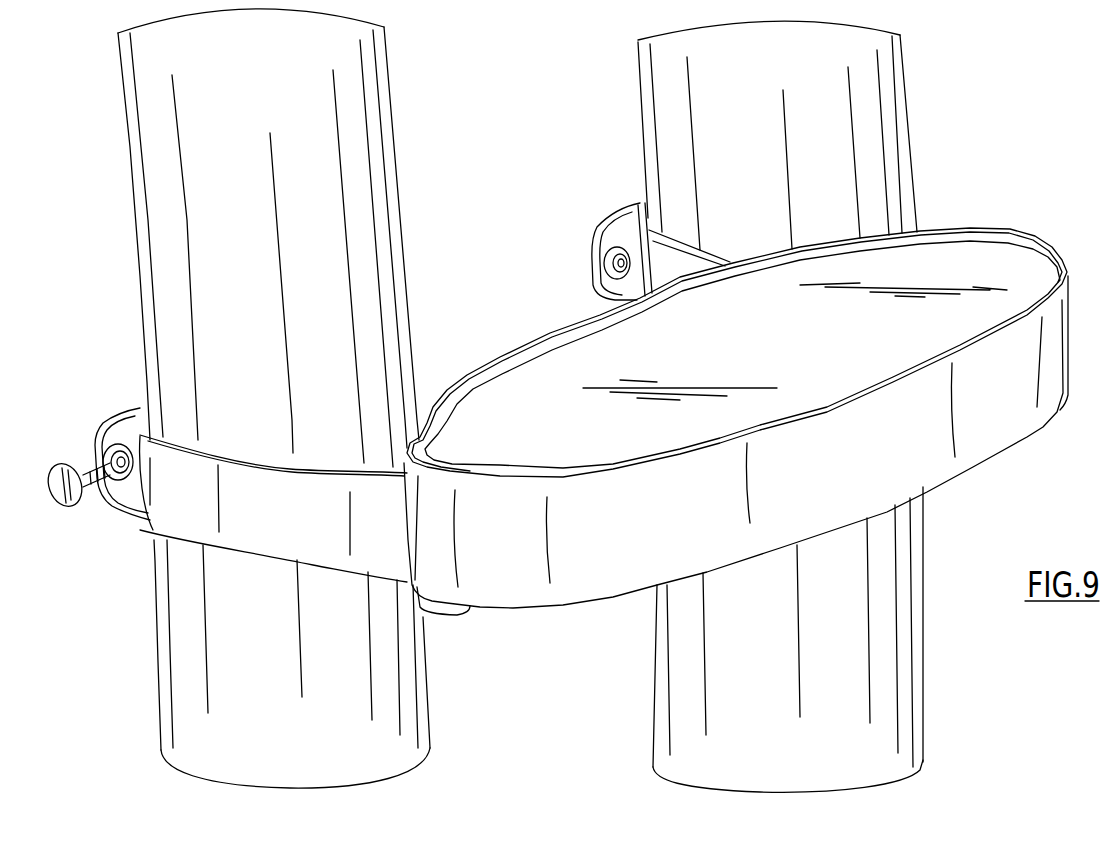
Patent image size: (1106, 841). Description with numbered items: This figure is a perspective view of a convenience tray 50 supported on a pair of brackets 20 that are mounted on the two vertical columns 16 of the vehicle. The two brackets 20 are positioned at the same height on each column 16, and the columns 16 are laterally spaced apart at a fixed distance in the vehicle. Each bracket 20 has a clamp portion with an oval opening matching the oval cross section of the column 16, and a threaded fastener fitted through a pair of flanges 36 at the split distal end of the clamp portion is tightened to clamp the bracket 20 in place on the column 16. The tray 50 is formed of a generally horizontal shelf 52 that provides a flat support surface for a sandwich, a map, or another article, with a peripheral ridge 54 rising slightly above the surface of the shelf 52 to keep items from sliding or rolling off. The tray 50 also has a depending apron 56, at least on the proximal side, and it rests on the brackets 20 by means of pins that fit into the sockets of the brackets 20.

The vertical column 16 is at (163, 250).
The bracket 20 is at (182, 512).
The flanges 36 is at (98, 425).
The convenience tray 50 is at (750, 399).
The shelf 52 is at (744, 372).
The peripheral ridge 54 is at (995, 247).
The depending apron 56 is at (923, 462).